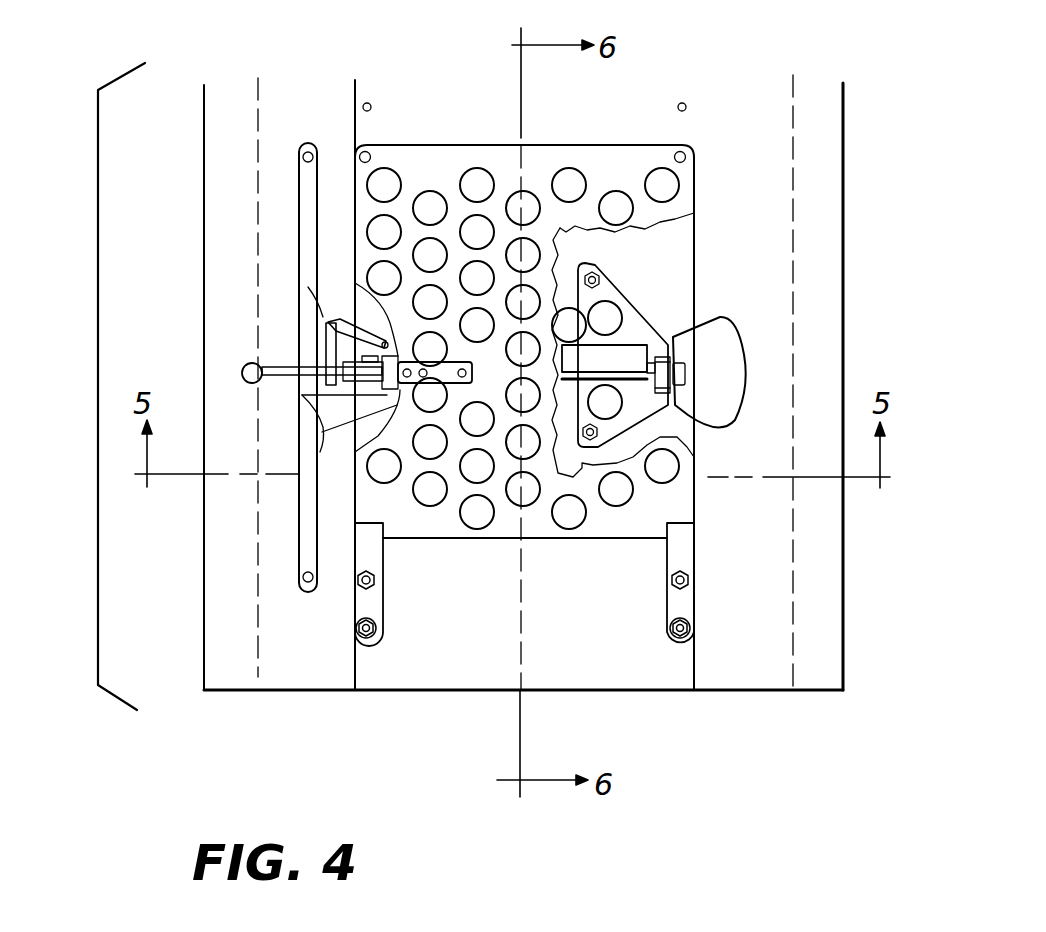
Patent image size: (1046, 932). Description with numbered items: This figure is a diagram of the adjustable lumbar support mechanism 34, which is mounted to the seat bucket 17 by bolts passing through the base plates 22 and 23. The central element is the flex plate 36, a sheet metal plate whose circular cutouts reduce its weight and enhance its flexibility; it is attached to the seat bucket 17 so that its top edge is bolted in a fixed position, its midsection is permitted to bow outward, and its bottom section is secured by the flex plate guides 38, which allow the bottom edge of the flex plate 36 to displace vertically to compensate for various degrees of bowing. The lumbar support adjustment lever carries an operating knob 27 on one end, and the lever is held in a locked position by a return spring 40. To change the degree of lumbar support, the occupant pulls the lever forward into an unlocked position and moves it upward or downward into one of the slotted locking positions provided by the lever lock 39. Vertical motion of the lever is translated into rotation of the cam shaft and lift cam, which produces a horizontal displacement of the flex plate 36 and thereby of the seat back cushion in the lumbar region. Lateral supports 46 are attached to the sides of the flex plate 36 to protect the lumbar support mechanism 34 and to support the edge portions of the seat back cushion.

The seat bucket 17 is at (687, 692).
The base plate 22 is at (300, 523).
The base plate 23 is at (640, 307).
The operating knob 27 is at (252, 365).
The adjustable lumbar support mechanism 34 is at (97, 417).
The flex plate 36 is at (478, 126).
The flex plate guides 38 is at (668, 580).
The lever lock 39 is at (298, 336).
The return spring 40 is at (327, 323).
The lateral supports 46 is at (725, 357).